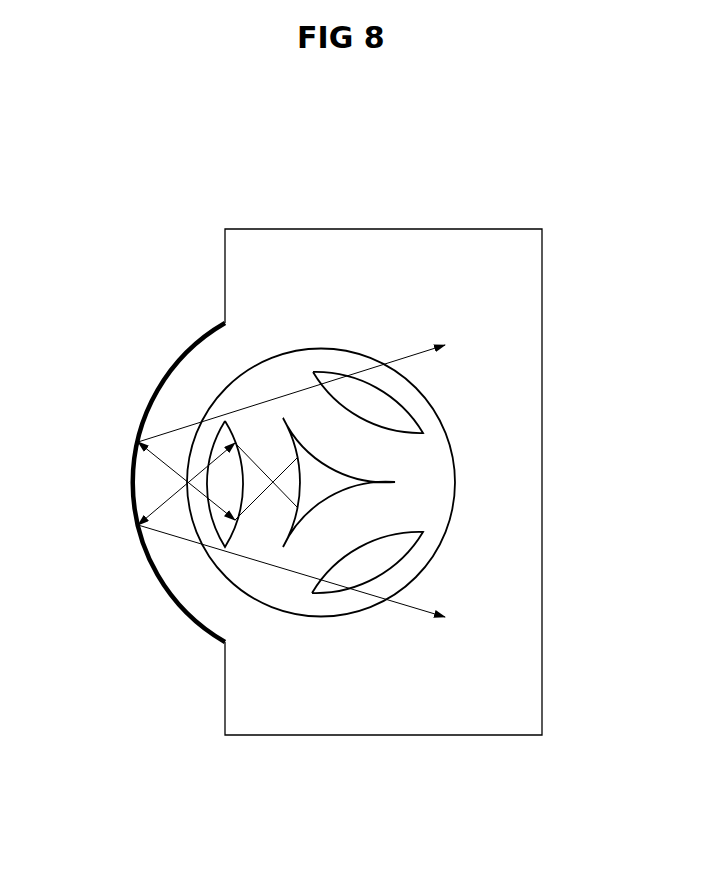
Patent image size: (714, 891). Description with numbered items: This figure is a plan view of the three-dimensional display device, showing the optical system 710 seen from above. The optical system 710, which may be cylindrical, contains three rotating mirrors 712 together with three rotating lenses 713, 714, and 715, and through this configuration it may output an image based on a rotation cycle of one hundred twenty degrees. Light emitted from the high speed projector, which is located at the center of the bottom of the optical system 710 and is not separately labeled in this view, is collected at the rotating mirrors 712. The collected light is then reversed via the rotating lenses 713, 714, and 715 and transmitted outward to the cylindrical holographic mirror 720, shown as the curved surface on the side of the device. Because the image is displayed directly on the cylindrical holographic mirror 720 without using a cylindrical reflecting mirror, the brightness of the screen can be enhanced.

The optical system 710 is at (443, 420).
The rotating mirrors 712 is at (281, 418).
The rotating lens 713 is at (208, 426).
The rotating lens 714 is at (415, 530).
The rotating lens 715 is at (332, 373).
The cylindrical holographic mirror 720 is at (150, 560).